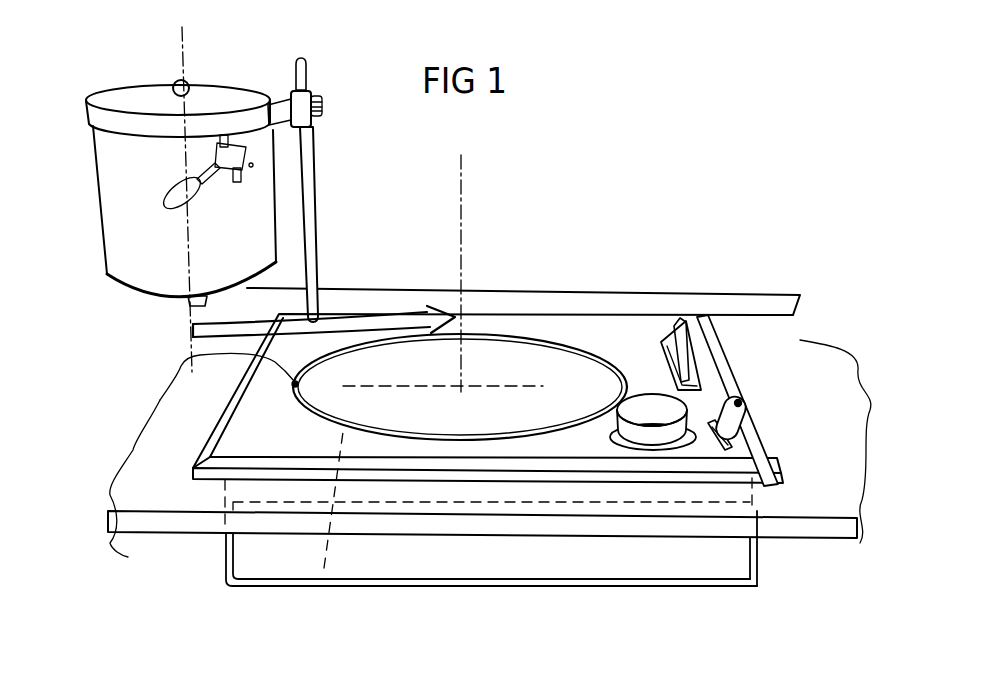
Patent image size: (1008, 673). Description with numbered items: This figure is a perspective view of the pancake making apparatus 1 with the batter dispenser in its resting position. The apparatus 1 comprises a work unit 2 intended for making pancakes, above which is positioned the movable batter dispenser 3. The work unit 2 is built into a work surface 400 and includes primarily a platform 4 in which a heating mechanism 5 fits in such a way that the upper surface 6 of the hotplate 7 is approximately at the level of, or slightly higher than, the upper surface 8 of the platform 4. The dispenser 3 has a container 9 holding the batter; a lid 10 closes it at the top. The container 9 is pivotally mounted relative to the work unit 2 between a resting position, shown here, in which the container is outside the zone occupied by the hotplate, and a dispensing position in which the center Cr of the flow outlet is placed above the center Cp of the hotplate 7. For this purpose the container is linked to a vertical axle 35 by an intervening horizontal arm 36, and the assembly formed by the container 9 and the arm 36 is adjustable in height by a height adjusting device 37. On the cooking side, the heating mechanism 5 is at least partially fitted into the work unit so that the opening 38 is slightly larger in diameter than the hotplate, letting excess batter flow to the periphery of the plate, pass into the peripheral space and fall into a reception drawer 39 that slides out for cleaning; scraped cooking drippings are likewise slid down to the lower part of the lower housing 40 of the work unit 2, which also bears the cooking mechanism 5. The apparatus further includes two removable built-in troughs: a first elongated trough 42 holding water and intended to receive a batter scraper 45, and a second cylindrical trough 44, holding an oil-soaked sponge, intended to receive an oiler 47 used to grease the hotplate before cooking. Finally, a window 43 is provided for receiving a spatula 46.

The pancake making apparatus 1 is at (687, 143).
The work unit 2 is at (743, 367).
The batter dispenser 3 is at (88, 272).
The platform 4 is at (557, 447).
The heating mechanism 5 is at (322, 575).
The upper surface of the hotplate 6 is at (557, 372).
The hotplate 7 is at (513, 365).
The upper surface of the platform 8 is at (623, 337).
The container 9 is at (133, 255).
The reservoir lid 10 is at (224, 92).
The vertical axle 35 is at (313, 182).
The horizontal arm 36 is at (283, 97).
The height adjusting device 37 is at (323, 98).
The opening 38 is at (242, 356).
The reception drawer 39 is at (447, 553).
The lower housing 40 is at (227, 562).
The work surface 400 is at (137, 493).
The first elongated trough 42 is at (693, 355).
The window 43 is at (733, 448).
The second cylindrical trough 44 is at (682, 457).
The batter scraper 45 is at (690, 319).
The spatula 46 is at (747, 407).
The oiler 47 is at (649, 418).
The center of the flow outlet Cr is at (188, 311).
The center of the hotplate Cp is at (464, 389).